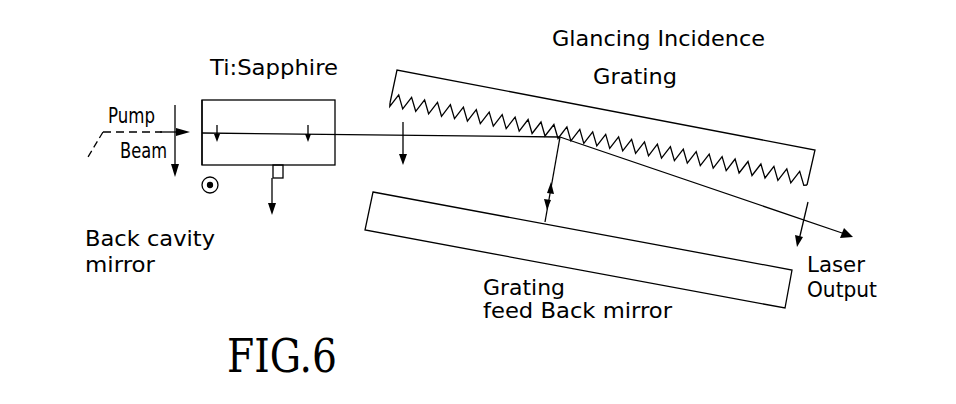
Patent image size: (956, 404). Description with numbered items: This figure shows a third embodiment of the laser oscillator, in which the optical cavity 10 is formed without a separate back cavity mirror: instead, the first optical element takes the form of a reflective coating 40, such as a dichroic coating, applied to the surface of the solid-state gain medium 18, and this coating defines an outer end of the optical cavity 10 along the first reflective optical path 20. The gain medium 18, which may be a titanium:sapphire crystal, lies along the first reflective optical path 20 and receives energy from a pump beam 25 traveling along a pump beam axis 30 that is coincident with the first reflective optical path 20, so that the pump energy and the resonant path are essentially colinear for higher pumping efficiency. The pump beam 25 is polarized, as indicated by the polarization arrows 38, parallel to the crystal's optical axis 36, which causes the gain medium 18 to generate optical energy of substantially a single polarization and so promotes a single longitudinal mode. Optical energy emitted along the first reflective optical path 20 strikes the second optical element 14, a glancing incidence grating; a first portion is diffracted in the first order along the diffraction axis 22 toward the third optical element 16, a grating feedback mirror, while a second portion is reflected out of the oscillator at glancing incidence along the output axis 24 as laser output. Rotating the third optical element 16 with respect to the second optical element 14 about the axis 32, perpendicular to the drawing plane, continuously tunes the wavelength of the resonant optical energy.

The optical cavity 10 is at (781, 103).
The second optical element 14 is at (453, 81).
The third optical element 16 is at (713, 297).
The solid-state gain medium 18 is at (335, 100).
The first reflective optical path 20 is at (363, 138).
The diffraction axis 22 is at (546, 177).
The output axis 24 is at (703, 188).
The pump beam 25 is at (172, 130).
The pump beam axis 30 is at (119, 159).
The axis 32 is at (220, 190).
The optical axis 36 is at (277, 190).
The polarization arrows 38 is at (158, 158).
The reflective coating 40 is at (202, 115).